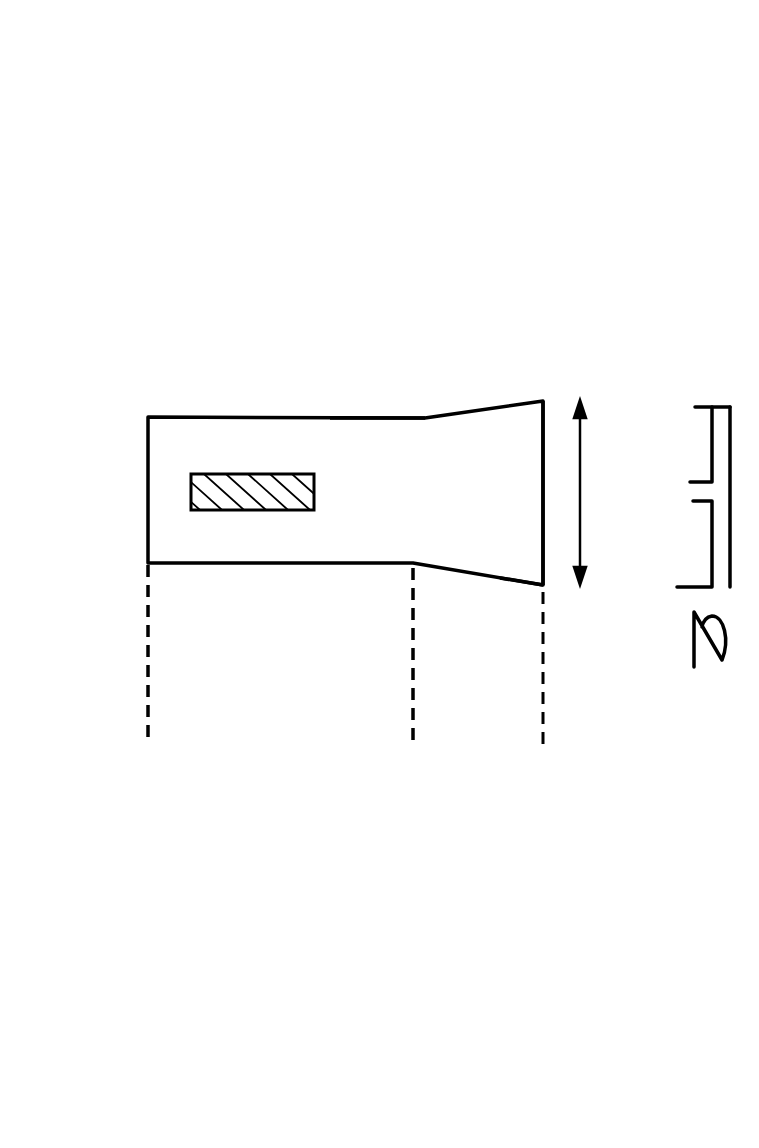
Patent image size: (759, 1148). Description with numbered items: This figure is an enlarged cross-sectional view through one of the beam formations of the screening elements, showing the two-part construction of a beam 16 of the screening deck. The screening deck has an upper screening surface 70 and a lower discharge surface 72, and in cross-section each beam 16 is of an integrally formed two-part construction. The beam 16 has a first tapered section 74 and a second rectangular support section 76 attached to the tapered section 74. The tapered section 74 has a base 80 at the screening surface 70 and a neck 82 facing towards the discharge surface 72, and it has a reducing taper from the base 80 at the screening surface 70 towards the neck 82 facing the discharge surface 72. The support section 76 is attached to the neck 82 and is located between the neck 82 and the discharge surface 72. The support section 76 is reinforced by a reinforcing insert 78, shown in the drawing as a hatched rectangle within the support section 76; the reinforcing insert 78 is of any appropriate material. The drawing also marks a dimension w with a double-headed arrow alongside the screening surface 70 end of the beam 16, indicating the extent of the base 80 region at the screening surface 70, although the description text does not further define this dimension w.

The beam 16 is at (586, 294).
The upper screening surface 70 is at (602, 450).
The lower discharge surface 72 is at (116, 507).
The first tapered section 74 is at (487, 720).
The second rectangular support section 76 is at (270, 705).
The reinforcing insert 78 is at (254, 474).
The base 80 is at (545, 563).
The neck 82 is at (371, 417).
The width w is at (600, 492).